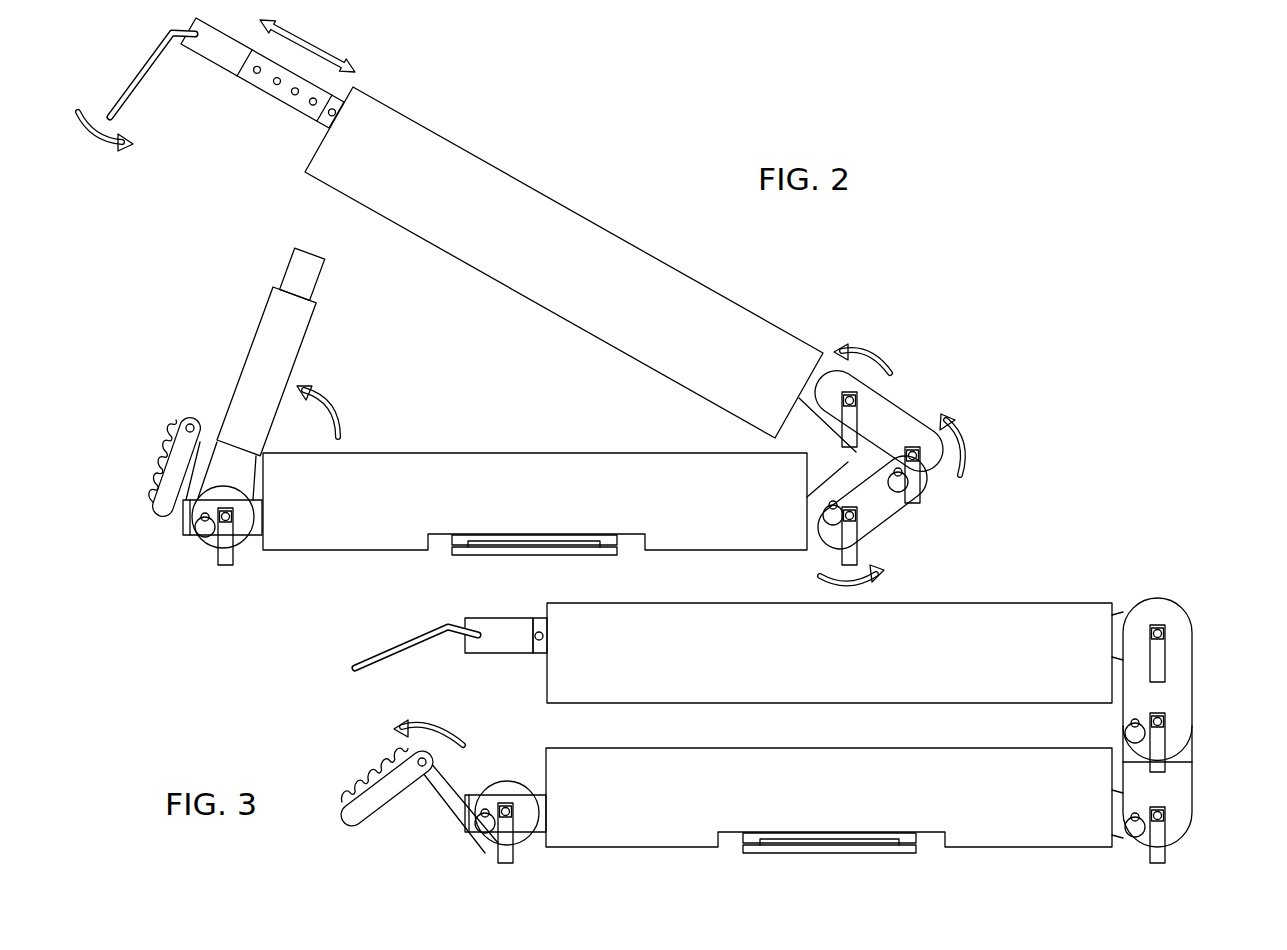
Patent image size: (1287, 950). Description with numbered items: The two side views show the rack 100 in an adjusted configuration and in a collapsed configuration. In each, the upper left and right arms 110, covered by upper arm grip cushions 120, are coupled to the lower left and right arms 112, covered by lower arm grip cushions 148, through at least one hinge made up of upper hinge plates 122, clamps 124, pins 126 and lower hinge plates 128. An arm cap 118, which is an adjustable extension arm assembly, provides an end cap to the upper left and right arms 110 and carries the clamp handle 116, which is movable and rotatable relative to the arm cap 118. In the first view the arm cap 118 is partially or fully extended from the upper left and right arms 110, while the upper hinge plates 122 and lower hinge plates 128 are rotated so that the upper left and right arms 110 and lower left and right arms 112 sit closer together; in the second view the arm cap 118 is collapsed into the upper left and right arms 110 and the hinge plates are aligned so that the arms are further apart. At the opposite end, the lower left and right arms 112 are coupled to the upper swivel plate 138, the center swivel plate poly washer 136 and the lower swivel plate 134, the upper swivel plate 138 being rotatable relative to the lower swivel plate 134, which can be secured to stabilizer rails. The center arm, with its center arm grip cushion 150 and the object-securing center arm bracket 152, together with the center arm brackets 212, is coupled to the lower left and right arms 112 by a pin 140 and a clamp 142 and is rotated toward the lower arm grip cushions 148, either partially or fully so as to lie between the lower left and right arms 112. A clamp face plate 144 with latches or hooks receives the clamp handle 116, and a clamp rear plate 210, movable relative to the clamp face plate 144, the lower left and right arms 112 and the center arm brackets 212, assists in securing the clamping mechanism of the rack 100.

In FIG. 2, the rack 100 is at (816, 270).
In FIG. 3, the rack 100 is at (1090, 548).
In FIG. 2, the upper left and right arms 110 is at (828, 365).
In FIG. 3, the upper left and right arms 110 is at (1122, 618).
In FIG. 2, the lower left and right arms 112 is at (260, 530).
In FIG. 3, the lower left and right arms 112 is at (540, 823).
In FIG. 2, the clamp handle 116 is at (133, 80).
In FIG. 3, the clamp handle 116 is at (372, 655).
In FIG. 2, the arm cap 118 is at (277, 100).
In FIG. 3, the arm cap 118 is at (517, 628).
In FIG. 2, the upper arm grip cushions 120 is at (500, 182).
In FIG. 3, the upper arm grip cushions 120 is at (1055, 614).
In FIG. 2, the upper hinge plates 122 is at (880, 400).
In FIG. 3, the upper hinge plates 122 is at (1175, 622).
In FIG. 2, the clamps 124 is at (905, 458).
In FIG. 3, the clamps 124 is at (1165, 675).
In FIG. 2, the pins 126 is at (888, 478).
In FIG. 3, the pins 126 is at (1130, 727).
In FIG. 2, the lower hinge plates 128 is at (887, 510).
In FIG. 3, the lower hinge plates 128 is at (1172, 790).
In FIG. 2, the lower swivel plate 134 is at (598, 552).
In FIG. 3, the lower swivel plate 134 is at (895, 851).
In FIG. 2, the center swivel plate poly washer 136 is at (550, 542).
In FIG. 3, the center swivel plate poly washer 136 is at (820, 843).
In FIG. 2, the upper swivel plate 138 is at (487, 537).
In FIG. 3, the upper swivel plate 138 is at (775, 836).
In FIG. 2, the pin 140 is at (200, 517).
In FIG. 3, the pin 140 is at (485, 812).
In FIG. 2, the clamp 142 is at (215, 560).
In FIG. 3, the clamp 142 is at (498, 857).
In FIG. 2, the clamp face plate 144 is at (165, 478).
In FIG. 3, the clamp face plate 144 is at (350, 800).
In FIG. 2, the lower arm grip cushions 148 is at (727, 542).
In FIG. 3, the lower arm grip cushions 148 is at (1042, 835).
In FIG. 2, the center arm grip cushion 150 is at (272, 312).
In FIG. 2, the center arm bracket 152 is at (310, 275).
In FIG. 2, the clamp rear plate 210 is at (192, 473).
In FIG. 3, the clamp rear plate 210 is at (450, 802).
In FIG. 2, the center arm brackets 212 is at (217, 493).
In FIG. 3, the center arm brackets 212 is at (527, 778).